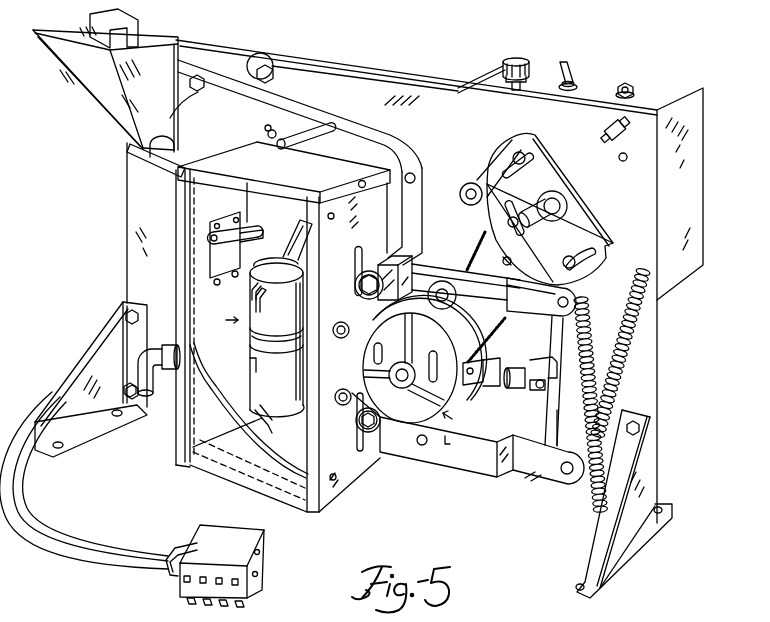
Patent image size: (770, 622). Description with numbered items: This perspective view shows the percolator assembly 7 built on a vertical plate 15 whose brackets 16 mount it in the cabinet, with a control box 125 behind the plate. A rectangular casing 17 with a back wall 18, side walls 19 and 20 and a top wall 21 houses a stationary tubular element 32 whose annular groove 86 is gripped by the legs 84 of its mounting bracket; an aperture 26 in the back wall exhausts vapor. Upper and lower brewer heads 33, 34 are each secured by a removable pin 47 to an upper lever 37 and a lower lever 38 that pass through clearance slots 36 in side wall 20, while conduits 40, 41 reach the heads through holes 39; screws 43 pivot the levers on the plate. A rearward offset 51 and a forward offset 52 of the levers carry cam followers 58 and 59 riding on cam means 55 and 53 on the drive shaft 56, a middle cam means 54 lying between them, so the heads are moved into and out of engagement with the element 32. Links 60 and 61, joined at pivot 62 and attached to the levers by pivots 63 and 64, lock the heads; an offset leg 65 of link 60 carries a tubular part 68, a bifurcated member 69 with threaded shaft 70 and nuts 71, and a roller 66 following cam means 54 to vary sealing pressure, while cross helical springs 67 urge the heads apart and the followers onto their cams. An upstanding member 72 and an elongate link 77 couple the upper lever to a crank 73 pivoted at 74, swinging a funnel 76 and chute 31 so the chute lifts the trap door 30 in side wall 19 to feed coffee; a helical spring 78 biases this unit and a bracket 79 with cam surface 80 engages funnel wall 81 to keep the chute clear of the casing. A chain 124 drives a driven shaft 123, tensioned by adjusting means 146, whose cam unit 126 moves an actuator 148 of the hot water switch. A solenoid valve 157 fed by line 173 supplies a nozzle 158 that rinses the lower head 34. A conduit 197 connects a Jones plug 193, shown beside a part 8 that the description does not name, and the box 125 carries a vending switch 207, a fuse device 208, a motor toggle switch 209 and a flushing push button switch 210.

The percolator assembly 7 is at (226, 319).
The electrical connector 8 is at (206, 532).
The vertical plate 15 is at (655, 320).
The brackets 16 is at (60, 396).
The casing 17 is at (176, 215).
The back wall 18 is at (257, 196).
The side wall 19 is at (202, 305).
The side wall 20 is at (343, 487).
The top wall 21 is at (237, 156).
The aperture 26 is at (296, 224).
The trap door 30 is at (246, 234).
The chute 31 is at (163, 173).
The tubular element 32 is at (302, 351).
The upper brewer head 33 is at (251, 288).
The lower brewer head 34 is at (250, 390).
The clearance slots 36 is at (355, 253).
The upper lever 37 is at (356, 270).
The lower lever 38 is at (372, 396).
The holes 39 is at (333, 330).
The conduit 40 is at (344, 338).
The conduit 41 is at (333, 397).
The screws 43 is at (359, 287).
The removable pin 47 is at (256, 306).
The rearward offset 51 is at (424, 264).
The forward offset 52 is at (478, 472).
The cam means 53 is at (456, 422).
The cam means 54 is at (386, 326).
The cam means 55 is at (452, 320).
The drive shaft 56 is at (400, 378).
The cam follower 58 is at (448, 281).
The cam follower 59 is at (446, 444).
The link 60 is at (572, 331).
The link 61 is at (557, 434).
The pivot 62 is at (558, 411).
The pivot 63 is at (569, 304).
The pivot 64 is at (566, 481).
The offset leg 65 is at (542, 368).
The cam follower 66 is at (492, 358).
The cross helical springs 67 is at (600, 370).
The tubular part 68 is at (517, 385).
The bifurcated member 69 is at (480, 380).
The threaded shaft 70 is at (552, 394).
The nuts 71 is at (500, 386).
The upstanding member 72 is at (419, 213).
The crank 73 is at (272, 60).
The pivot 74 is at (275, 78).
The funnel 76 is at (167, 119).
The elongate link 77 is at (384, 138).
The helical spring 78 is at (262, 125).
The bracket 79 is at (139, 22).
The cam surface 80 is at (100, 48).
The wall 81 is at (62, 31).
The legs 84 is at (247, 345).
The annular groove 86 is at (280, 343).
The driven shaft 123 is at (539, 198).
The chain 124 is at (486, 236).
The control box 125 is at (695, 146).
The cam unit 126 is at (568, 133).
The adjusting means 146 is at (611, 124).
The actuator 148 is at (493, 158).
The solenoid actuated valve 157 is at (172, 344).
The nozzle 158 is at (256, 362).
The line 173 is at (160, 405).
The plug 193 is at (220, 534).
The conduit 197 is at (57, 538).
The manually operable switch 207 is at (492, 77).
The fuse device 208 is at (518, 60).
The toggle switch 209 is at (573, 67).
The push button switch 210 is at (632, 82).